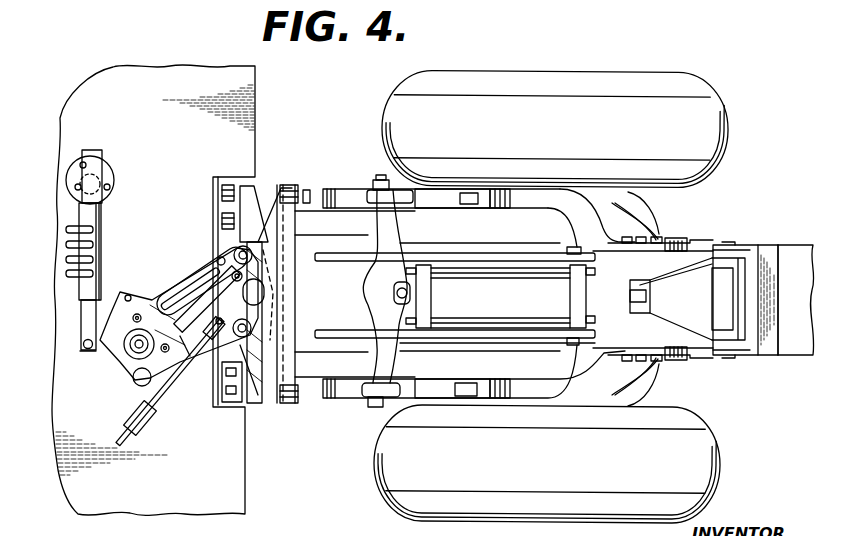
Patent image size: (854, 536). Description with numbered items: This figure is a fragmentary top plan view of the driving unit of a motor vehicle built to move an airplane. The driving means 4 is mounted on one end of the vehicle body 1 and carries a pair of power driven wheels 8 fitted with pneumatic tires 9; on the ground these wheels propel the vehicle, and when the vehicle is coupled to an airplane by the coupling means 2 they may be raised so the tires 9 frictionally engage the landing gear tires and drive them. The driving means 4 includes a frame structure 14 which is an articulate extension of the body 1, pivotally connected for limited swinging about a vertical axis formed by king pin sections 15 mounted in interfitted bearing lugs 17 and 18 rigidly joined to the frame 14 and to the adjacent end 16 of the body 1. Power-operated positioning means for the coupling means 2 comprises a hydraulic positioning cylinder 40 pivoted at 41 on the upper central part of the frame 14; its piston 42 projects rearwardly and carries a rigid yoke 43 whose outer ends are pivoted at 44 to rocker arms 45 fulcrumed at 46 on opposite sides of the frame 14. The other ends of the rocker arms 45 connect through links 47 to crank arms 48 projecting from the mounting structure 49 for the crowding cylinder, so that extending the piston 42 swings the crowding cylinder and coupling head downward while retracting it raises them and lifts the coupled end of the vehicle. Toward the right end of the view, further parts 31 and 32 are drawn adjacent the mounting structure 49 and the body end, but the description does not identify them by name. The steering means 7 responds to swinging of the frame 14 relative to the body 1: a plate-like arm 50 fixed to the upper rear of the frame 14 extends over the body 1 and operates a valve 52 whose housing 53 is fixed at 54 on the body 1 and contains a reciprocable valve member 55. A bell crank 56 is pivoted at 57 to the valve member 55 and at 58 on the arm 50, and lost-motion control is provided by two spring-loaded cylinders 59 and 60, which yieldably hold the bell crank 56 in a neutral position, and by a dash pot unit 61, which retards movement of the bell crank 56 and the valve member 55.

The vehicle body 1 is at (268, 108).
The coupling means 2 is at (807, 243).
The driving means 4 is at (533, 70).
The steering means 7 is at (166, 262).
The power driven wheels 8 is at (728, 97).
The pneumatic tires 9 is at (590, 77).
The frame structure 14 is at (297, 408).
The king pin sections 15 is at (264, 292).
The adjacent end of the vehicle body 16 is at (253, 190).
The bearing lug 17 is at (258, 360).
The bearing lug 18 is at (267, 318).
The clevis 31 is at (656, 282).
The support block 32 is at (748, 248).
The hydraulic positioning cylinder 40 is at (455, 287).
The pivot 41 is at (573, 362).
The piston 42 is at (396, 294).
The rigid yoke 43 is at (366, 284).
The pivot 44 is at (379, 186).
The rocker arms 45 is at (348, 397).
The fulcrum 46 is at (340, 189).
The links 47 is at (436, 195).
The crank arms 48 is at (551, 195).
The mounting structure 49 is at (690, 239).
The plate-like arm 50 is at (152, 288).
The valve 52 is at (112, 213).
The housing 53 is at (104, 240).
The fixing point 54 is at (110, 171).
The valve member 55 is at (79, 330).
The bell crank 56 is at (109, 368).
The pivot 57 is at (88, 352).
The pivot 58 is at (138, 350).
The spring-loaded cylinder 59 is at (192, 280).
The spring-loaded cylinder 60 is at (198, 308).
The dash pot unit 61 is at (157, 405).